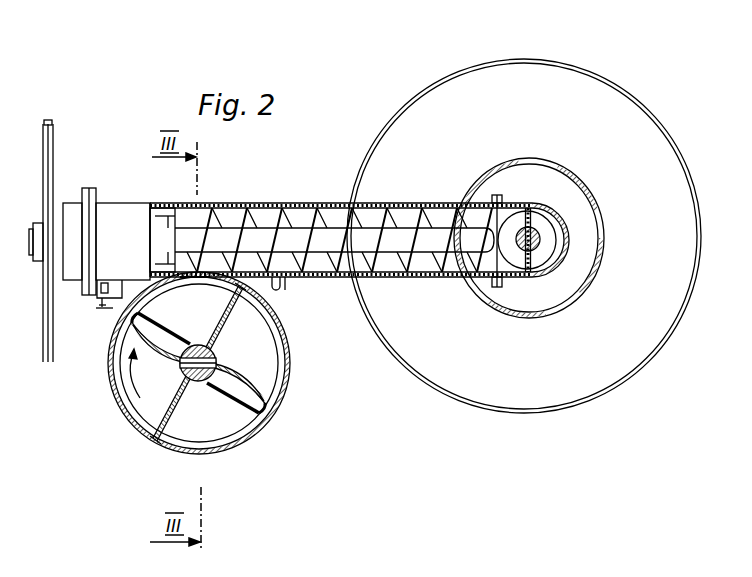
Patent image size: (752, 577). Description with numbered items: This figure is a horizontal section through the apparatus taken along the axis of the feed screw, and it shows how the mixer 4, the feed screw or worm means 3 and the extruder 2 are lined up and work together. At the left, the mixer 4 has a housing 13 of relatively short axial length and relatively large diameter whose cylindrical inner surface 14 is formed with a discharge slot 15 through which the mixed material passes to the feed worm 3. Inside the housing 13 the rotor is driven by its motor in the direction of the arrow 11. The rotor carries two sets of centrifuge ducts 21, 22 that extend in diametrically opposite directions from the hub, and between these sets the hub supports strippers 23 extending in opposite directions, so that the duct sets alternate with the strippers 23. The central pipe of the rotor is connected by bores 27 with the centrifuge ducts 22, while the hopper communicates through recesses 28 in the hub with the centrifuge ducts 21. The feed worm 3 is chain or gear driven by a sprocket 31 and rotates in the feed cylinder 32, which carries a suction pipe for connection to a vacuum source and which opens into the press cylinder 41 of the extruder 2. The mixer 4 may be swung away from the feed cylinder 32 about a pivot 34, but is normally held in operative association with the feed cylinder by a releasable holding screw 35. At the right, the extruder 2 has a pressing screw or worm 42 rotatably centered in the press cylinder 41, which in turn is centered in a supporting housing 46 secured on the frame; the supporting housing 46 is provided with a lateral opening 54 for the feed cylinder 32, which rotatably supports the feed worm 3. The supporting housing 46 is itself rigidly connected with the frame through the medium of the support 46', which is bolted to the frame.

The extruder 2 is at (445, 68).
The feed screw or worm means 3 is at (300, 240).
The mixer 4 is at (139, 468).
The arrow 11 is at (145, 373).
The housing 13 is at (286, 393).
The cylindrical inner surface 14 is at (124, 416).
The discharge slot 15 is at (193, 279).
The centrifuge ducts 21 is at (167, 336).
The centrifuge ducts 22 is at (129, 334).
The strippers 23 is at (228, 306).
The bores 27 is at (217, 356).
The recesses 28 is at (196, 347).
The sprocket 31 is at (50, 135).
The feed cylinder 32 is at (223, 202).
The pivot 34 is at (282, 284).
The releasable holding screw 35 is at (98, 308).
The press cylinder 41 is at (556, 222).
The pressing screw or worm 42 is at (551, 250).
The supporting housing 46 is at (529, 213).
The support 46' is at (524, 219).
The lateral opening 54 is at (468, 190).